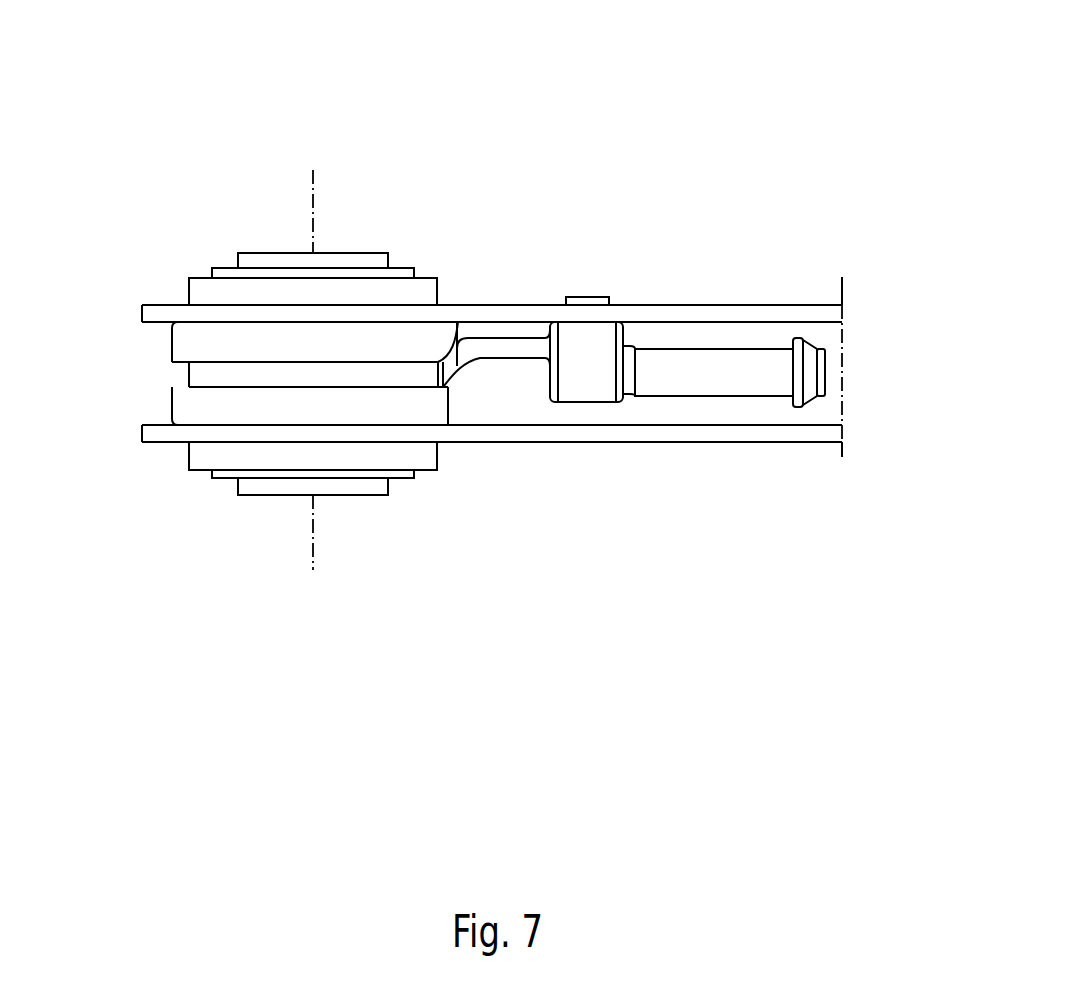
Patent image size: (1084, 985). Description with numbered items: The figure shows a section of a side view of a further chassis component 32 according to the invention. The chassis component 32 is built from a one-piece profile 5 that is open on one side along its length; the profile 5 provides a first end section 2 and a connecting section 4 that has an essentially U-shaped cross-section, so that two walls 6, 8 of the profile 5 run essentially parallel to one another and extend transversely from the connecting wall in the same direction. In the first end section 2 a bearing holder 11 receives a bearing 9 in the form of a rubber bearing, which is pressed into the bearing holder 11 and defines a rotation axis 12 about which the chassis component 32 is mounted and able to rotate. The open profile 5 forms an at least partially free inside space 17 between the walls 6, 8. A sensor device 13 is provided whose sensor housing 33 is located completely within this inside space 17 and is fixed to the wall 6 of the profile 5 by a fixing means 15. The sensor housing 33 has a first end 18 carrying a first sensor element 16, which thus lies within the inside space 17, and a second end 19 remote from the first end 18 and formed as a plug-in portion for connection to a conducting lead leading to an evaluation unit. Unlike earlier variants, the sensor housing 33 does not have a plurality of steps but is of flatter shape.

The first end section 2 is at (465, 182).
The connecting section 4 is at (778, 195).
The profile 5 is at (638, 540).
The wall 6 is at (800, 305).
The wall 8 is at (802, 443).
The bearing 9 is at (212, 497).
The bearing holder 11 is at (165, 370).
The rotation axis 12 is at (312, 182).
The sensor device 13 is at (490, 268).
The fixing means 15 is at (592, 297).
The first sensor element 16 is at (450, 387).
The inside space 17 is at (828, 410).
The first end 18 is at (467, 392).
The second end 19 is at (742, 407).
The chassis component 32 is at (632, 112).
The sensor housing 33 is at (567, 397).